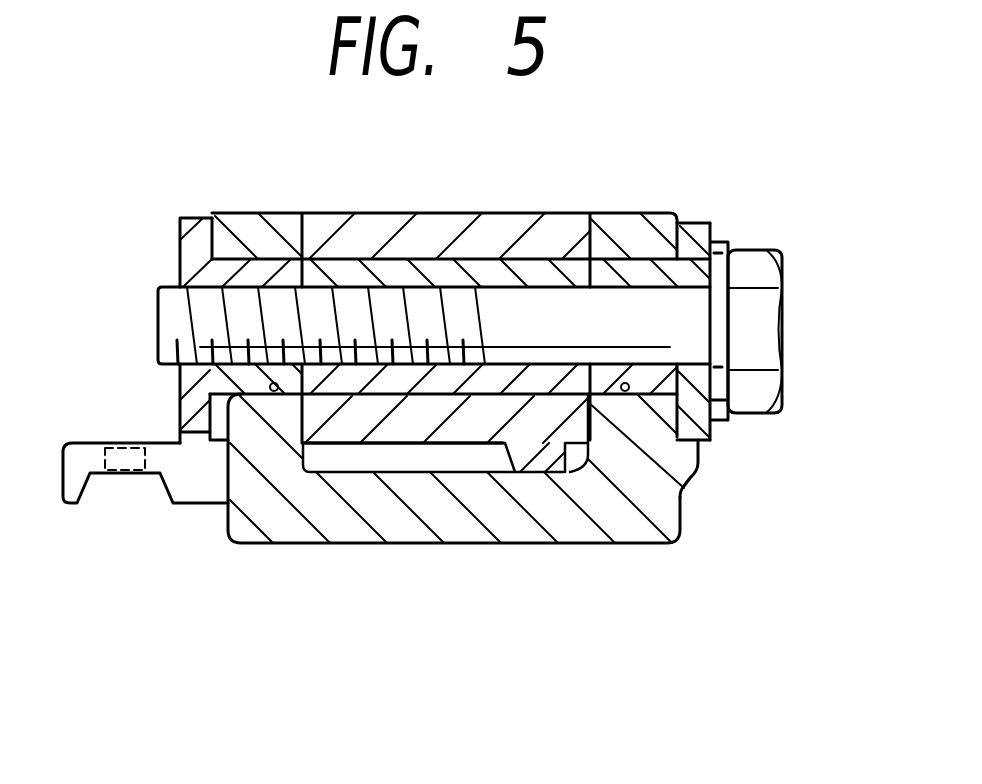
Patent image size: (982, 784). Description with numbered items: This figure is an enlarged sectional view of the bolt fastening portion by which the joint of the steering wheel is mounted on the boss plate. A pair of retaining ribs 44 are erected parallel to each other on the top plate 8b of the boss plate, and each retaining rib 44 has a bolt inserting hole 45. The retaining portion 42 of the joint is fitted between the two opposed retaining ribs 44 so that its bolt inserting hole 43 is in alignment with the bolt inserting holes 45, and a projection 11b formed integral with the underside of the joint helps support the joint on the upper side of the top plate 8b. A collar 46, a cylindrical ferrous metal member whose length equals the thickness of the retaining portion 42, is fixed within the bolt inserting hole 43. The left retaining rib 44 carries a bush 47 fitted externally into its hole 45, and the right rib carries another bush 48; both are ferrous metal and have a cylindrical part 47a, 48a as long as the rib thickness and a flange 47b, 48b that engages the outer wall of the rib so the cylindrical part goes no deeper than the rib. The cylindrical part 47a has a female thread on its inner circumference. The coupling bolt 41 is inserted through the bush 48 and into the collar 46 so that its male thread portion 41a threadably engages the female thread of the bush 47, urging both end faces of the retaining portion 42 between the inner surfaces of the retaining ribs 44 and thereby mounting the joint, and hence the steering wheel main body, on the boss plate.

The top plate 8b is at (578, 543).
The projection 11b is at (488, 475).
The coupling bolt 41 is at (786, 242).
The male thread portion 41a is at (353, 394).
The retaining portion 42 is at (462, 213).
The bolt inserting hole 43 is at (548, 262).
The retaining rib 44 is at (637, 213).
The bolt inserting hole 45 is at (624, 392).
The collar 46 is at (425, 262).
The bush 47 is at (168, 229).
The cylindrical part 47a is at (237, 258).
The flange 47b is at (180, 393).
The bush 48 is at (702, 210).
The cylindrical part 48a is at (653, 403).
The flange 48b is at (712, 432).